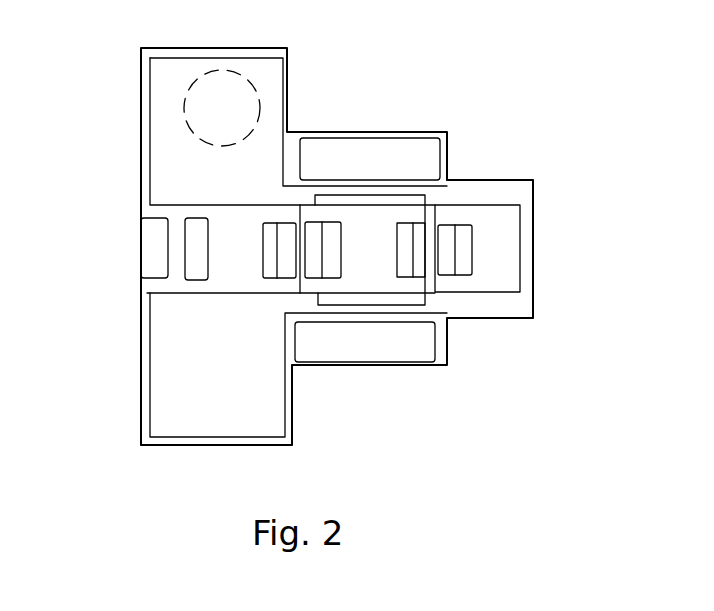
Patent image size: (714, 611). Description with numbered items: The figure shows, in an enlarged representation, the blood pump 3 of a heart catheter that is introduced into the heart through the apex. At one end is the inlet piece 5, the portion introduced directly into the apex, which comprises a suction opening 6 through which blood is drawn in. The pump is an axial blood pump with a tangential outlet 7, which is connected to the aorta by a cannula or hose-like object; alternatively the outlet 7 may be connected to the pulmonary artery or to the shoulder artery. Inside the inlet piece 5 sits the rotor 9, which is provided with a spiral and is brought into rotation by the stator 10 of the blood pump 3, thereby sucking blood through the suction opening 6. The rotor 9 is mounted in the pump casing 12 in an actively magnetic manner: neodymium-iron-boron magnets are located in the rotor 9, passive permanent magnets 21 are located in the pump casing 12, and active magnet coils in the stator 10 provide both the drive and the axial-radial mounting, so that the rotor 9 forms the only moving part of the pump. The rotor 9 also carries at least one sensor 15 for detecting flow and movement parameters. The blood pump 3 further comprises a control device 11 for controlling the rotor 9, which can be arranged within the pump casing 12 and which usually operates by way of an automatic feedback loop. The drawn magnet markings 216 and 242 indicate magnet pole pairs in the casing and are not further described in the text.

The blood pump 3 is at (373, 70).
The inlet piece 5 is at (499, 158).
The suction opening 6 is at (553, 247).
The outlet 7 is at (208, 100).
The rotor 9 is at (397, 278).
The stator 10 is at (405, 152).
The control device 11 is at (153, 248).
The pump casing 12 is at (173, 445).
The sensor 15 is at (197, 240).
The permanent magnet 21 is at (290, 278).
The magnet 216 is at (285, 250).
The magnet 242 is at (476, 250).